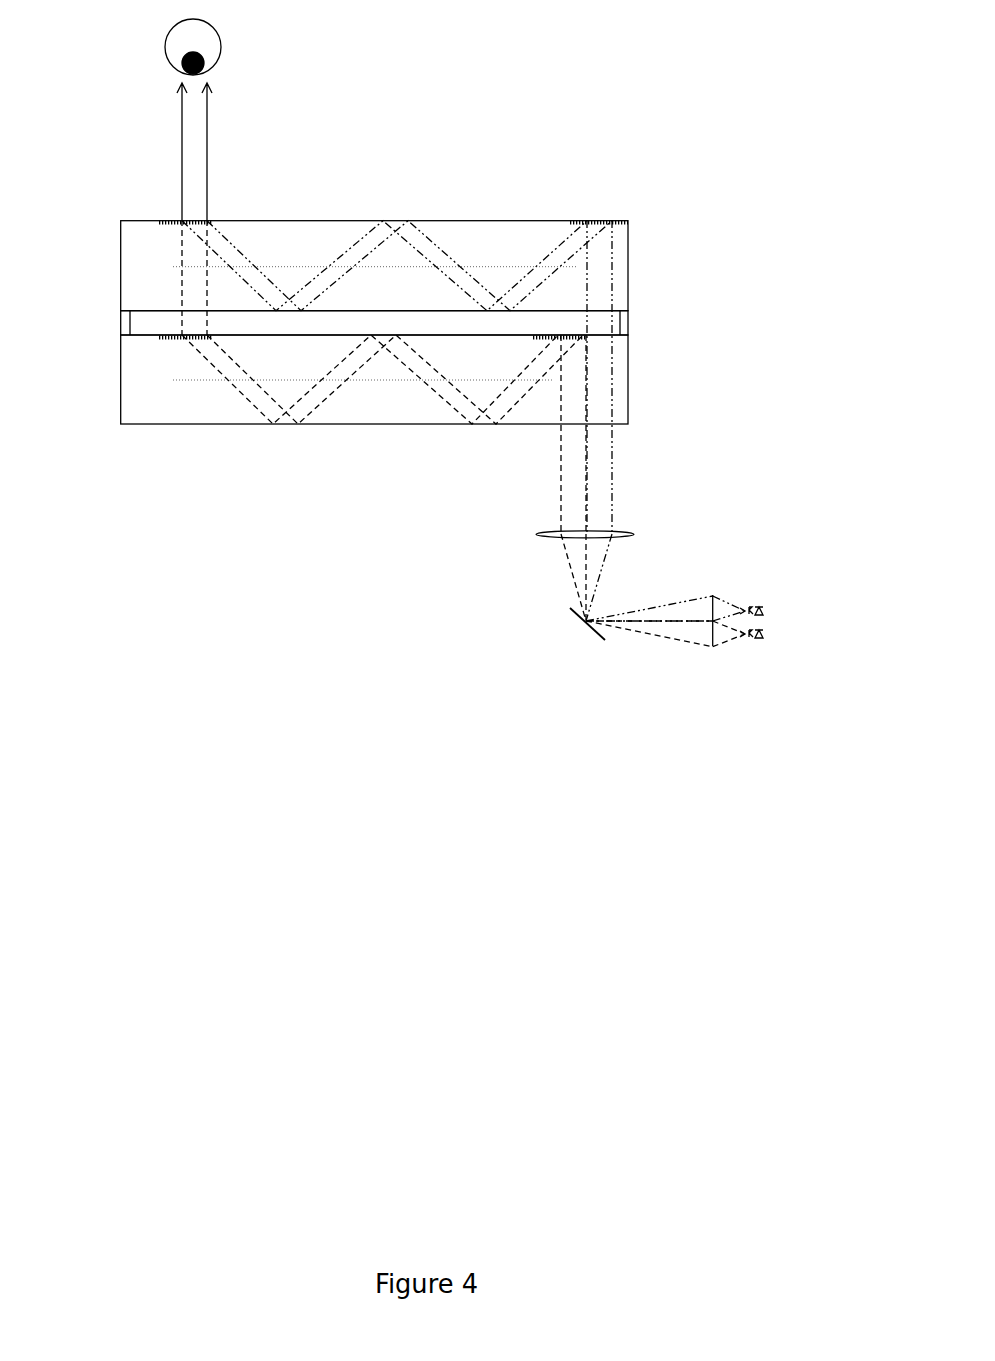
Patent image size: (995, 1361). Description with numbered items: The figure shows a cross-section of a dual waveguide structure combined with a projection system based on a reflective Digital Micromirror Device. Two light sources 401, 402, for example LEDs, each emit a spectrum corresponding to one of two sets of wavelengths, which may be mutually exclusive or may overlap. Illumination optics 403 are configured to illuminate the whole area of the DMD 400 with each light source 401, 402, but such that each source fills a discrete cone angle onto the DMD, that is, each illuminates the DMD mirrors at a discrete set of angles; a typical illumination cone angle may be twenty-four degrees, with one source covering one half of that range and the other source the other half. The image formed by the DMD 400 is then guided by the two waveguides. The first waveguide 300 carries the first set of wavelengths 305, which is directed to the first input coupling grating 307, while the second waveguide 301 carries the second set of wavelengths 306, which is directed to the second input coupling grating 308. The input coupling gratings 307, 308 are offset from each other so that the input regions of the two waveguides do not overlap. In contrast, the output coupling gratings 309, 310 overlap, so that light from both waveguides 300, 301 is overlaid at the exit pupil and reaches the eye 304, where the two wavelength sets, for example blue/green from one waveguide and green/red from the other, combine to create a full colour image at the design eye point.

The first waveguide 300 is at (408, 436).
The second waveguide 301 is at (425, 208).
The eye 304 is at (225, 37).
The first set of wavelengths 305 is at (570, 485).
The second set of wavelengths 306 is at (600, 480).
The first input coupling grating 307 is at (545, 333).
The second input coupling grating 308 is at (598, 220).
The output coupling grating 309 is at (163, 342).
The output coupling grating 310 is at (164, 236).
The DMD 400 is at (573, 620).
The light source 401 is at (768, 637).
The light source 402 is at (768, 608).
The illumination optics 403 is at (717, 653).